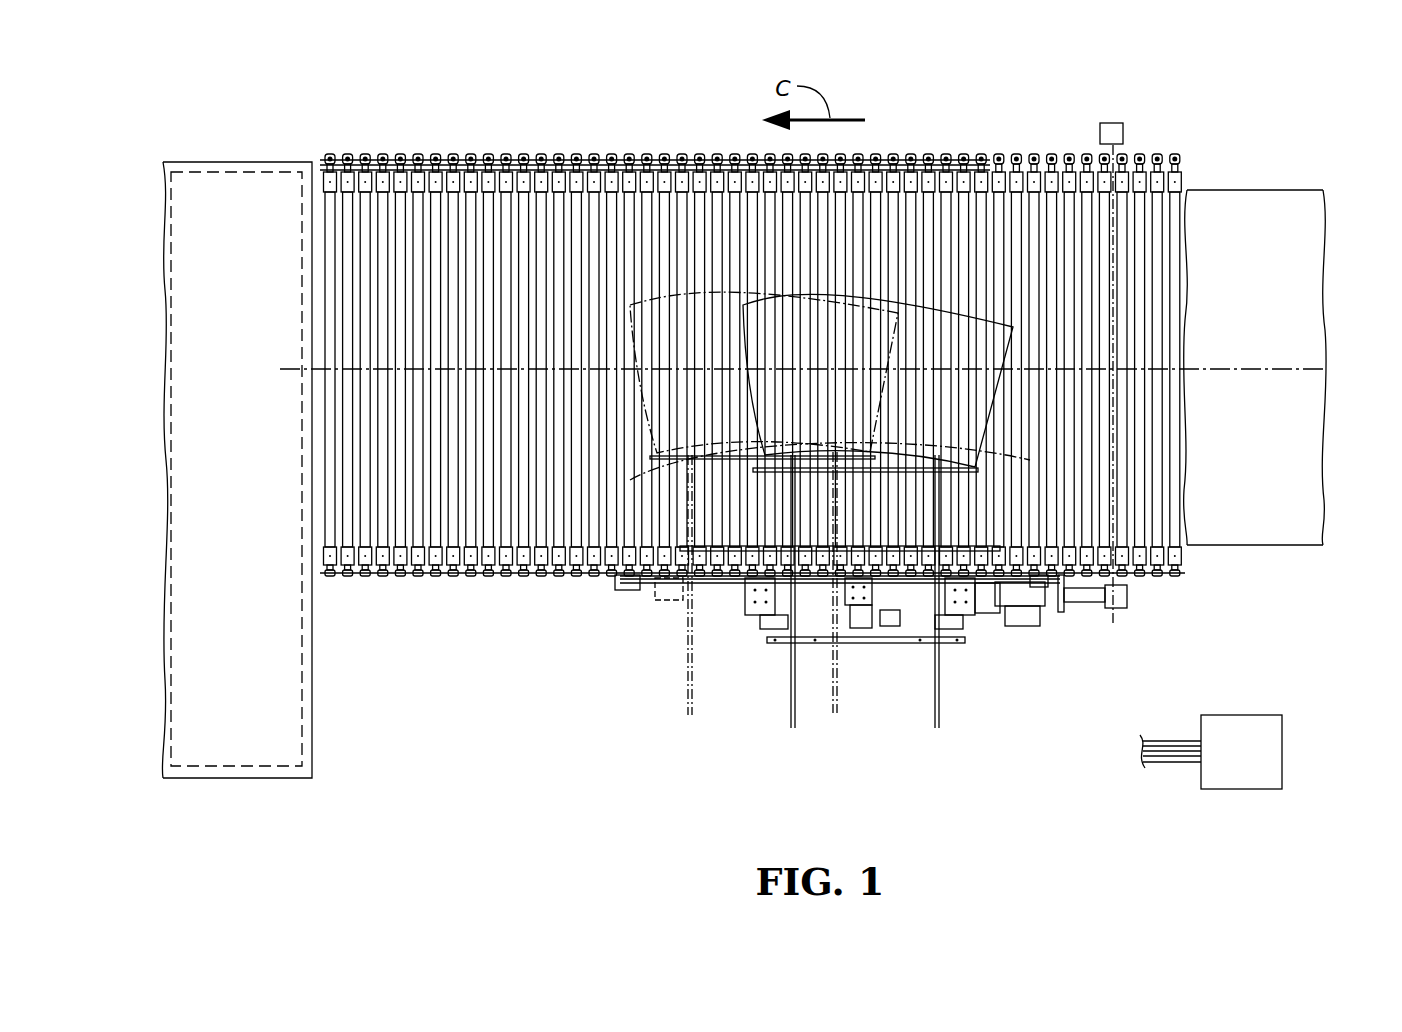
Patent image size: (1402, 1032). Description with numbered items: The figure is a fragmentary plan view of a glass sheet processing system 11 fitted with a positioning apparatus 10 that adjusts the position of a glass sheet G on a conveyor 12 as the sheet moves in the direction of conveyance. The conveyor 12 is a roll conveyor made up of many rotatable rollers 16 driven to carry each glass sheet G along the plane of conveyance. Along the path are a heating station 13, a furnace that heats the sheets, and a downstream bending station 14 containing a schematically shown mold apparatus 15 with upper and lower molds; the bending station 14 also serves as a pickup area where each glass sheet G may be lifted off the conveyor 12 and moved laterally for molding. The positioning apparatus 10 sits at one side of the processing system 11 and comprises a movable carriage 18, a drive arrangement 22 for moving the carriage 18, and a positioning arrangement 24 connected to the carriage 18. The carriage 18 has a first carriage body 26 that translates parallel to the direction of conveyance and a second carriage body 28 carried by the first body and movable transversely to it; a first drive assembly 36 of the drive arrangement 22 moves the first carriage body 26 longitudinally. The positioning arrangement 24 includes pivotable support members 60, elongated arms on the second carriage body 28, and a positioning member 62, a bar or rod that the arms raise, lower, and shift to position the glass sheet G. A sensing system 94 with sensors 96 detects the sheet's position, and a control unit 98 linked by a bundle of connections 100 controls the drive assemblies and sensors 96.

The positioning apparatus 10 is at (880, 576).
The glass sheet processing system 11 is at (807, 416).
The conveyor 12 is at (1192, 581).
The heating station 13 is at (1276, 178).
The bending station 14 is at (244, 130).
The mold apparatus 15 is at (307, 732).
The rollers 16 is at (807, 405).
The carriage 18 is at (668, 612).
The drive arrangement 22 is at (1057, 630).
The positioning arrangement 24 is at (945, 513).
The first carriage body 26 is at (675, 605).
The second carriage body 28 is at (876, 630).
The first drive assembly 36 is at (1070, 613).
The support members 60 is at (678, 690).
The positioning member 62 is at (980, 470).
The sensing system 94 is at (1164, 347).
The sensors 96 is at (1124, 137).
The control unit 98 is at (1283, 750).
The connections 100 is at (1185, 774).
The glass sheet G is at (1005, 330).